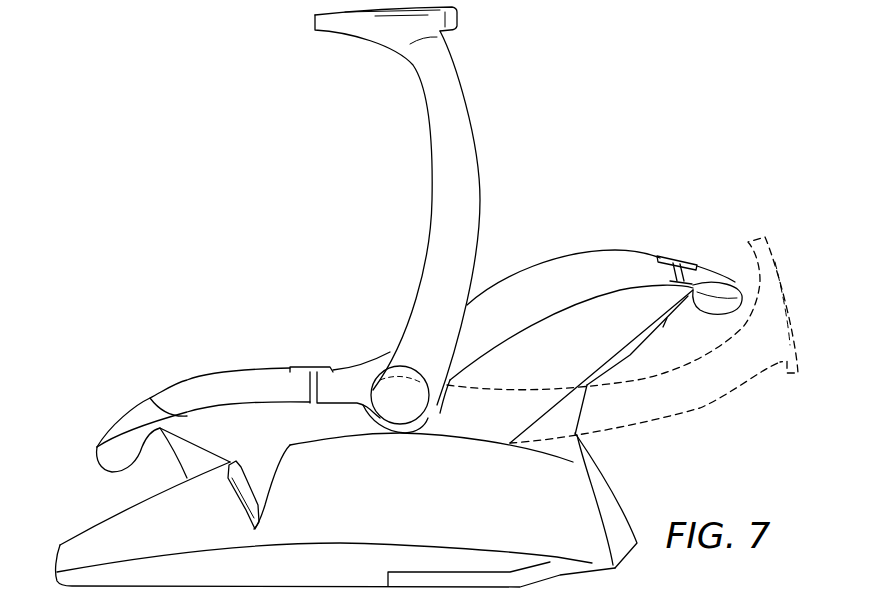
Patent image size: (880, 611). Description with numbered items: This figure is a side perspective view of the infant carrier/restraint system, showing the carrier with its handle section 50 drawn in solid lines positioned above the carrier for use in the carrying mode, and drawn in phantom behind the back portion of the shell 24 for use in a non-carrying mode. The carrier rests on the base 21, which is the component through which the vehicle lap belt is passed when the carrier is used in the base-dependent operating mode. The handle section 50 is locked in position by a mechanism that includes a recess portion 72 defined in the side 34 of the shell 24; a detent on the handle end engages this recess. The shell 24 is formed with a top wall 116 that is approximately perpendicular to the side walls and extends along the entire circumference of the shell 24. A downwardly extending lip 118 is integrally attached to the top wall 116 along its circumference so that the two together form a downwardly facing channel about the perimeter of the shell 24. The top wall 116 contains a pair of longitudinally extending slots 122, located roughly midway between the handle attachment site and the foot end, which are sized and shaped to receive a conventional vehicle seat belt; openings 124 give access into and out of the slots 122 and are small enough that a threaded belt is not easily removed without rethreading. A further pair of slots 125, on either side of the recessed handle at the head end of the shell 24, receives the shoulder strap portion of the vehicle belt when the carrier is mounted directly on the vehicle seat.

The base 21 is at (54, 554).
The shell 24 is at (680, 314).
The side 34 is at (150, 398).
The handle section 50 is at (476, 97).
The recess portion 72 is at (421, 427).
The top wall 116 is at (187, 380).
The lip 118 is at (526, 305).
The slots 122 is at (322, 367).
The openings 124 is at (307, 388).
The slots 125 is at (686, 256).